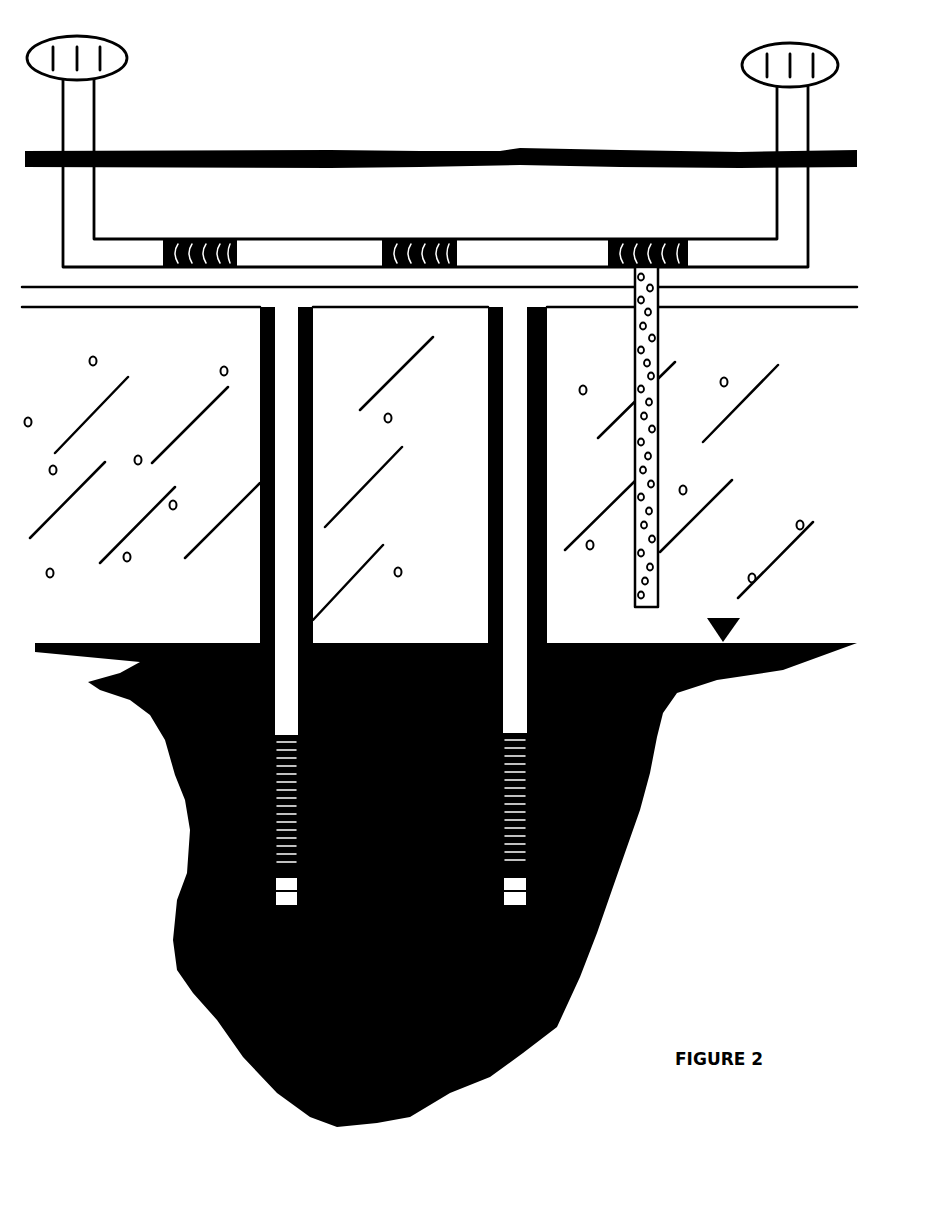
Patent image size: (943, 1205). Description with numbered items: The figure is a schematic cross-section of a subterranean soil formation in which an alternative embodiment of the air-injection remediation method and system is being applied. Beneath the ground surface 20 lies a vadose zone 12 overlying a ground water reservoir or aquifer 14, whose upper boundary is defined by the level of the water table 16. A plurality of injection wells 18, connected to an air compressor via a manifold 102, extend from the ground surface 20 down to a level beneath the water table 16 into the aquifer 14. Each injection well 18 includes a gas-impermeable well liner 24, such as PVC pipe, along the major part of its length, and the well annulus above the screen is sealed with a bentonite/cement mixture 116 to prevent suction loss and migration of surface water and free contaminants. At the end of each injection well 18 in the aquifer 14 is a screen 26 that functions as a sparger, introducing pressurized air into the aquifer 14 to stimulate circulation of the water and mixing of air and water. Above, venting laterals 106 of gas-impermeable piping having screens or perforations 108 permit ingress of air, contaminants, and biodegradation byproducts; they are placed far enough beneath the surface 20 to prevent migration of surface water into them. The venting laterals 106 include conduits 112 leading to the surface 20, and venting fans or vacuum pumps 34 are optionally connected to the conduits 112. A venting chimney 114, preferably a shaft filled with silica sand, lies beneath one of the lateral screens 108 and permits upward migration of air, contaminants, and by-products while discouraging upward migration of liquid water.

The vadose zone 12 is at (746, 533).
The ground water reservoir or aquifer 14 is at (656, 760).
The water table 16 is at (742, 641).
The injection well 18 is at (396, 610).
The ground surface 20 is at (327, 152).
The gas-impermeable well liner 24 is at (284, 446).
The screen 26 is at (277, 843).
The venting fan or vacuum pump 34 is at (128, 62).
The manifold 102 is at (703, 300).
The venting lateral 106 is at (543, 240).
The screens or perforations 108 is at (415, 240).
The conduit 112 is at (95, 190).
The venting chimney 114 is at (660, 465).
The bentonite/cement mixture 116 is at (263, 582).